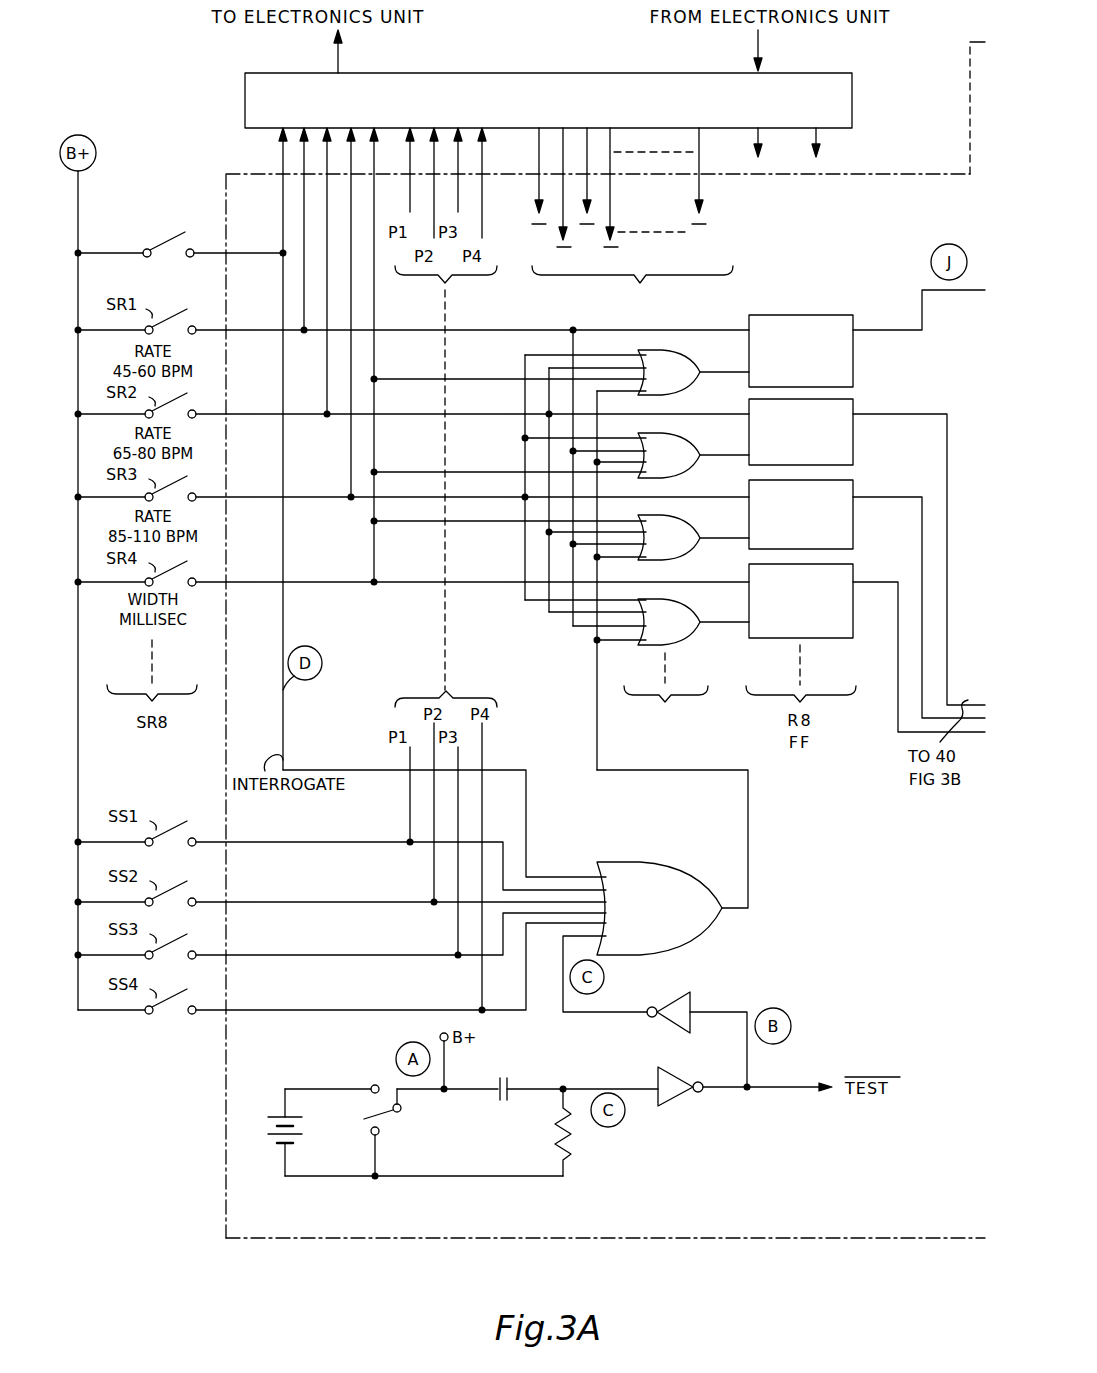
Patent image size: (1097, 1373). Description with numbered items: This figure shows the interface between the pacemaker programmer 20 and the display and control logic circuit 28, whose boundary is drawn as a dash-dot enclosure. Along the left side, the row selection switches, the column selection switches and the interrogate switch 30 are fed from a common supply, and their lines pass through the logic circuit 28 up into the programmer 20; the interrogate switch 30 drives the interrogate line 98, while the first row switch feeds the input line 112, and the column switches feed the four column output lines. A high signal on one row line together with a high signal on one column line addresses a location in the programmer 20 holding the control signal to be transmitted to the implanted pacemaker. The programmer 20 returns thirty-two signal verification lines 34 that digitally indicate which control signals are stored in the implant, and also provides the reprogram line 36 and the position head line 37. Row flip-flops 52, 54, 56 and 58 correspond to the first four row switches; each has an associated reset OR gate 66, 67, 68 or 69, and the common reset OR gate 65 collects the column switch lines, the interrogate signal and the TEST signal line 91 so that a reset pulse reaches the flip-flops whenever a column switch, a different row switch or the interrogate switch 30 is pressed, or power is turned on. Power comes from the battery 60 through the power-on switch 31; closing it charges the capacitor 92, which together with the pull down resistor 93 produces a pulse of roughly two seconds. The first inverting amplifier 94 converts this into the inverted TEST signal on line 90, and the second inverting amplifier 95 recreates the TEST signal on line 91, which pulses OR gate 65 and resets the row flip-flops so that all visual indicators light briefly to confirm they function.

The programmer 20 is at (245, 82).
The display and control logic circuit 28 is at (226, 186).
The interrogate switch 30 is at (167, 238).
The interrogate line 98 is at (283, 222).
The input line 112 is at (304, 292).
The signal verification lines 34 is at (642, 283).
The reprogram line 36 is at (761, 157).
The position head line 37 is at (819, 156).
The row flip-flop 52 is at (853, 316).
The row flip-flop 54 is at (853, 404).
The row flip-flop 56 is at (853, 488).
The row flip-flop 58 is at (853, 572).
The reset OR gate 66 is at (693, 372).
The reset OR gate 67 is at (693, 455).
The reset OR gate 68 is at (693, 537).
The reset OR gate 69 is at (693, 622).
The reset OR gate 65 is at (672, 862).
The TEST signal line 91 is at (562, 1013).
The second inverting amplifier 95 is at (667, 996).
The inverted TEST signal line 90 is at (722, 1010).
The first inverting amplifier 94 is at (668, 1106).
The battery 60 is at (270, 1117).
The power-on switch 31 is at (389, 1118).
The capacitor 92 is at (498, 1096).
The pull down resistor 93 is at (571, 1145).